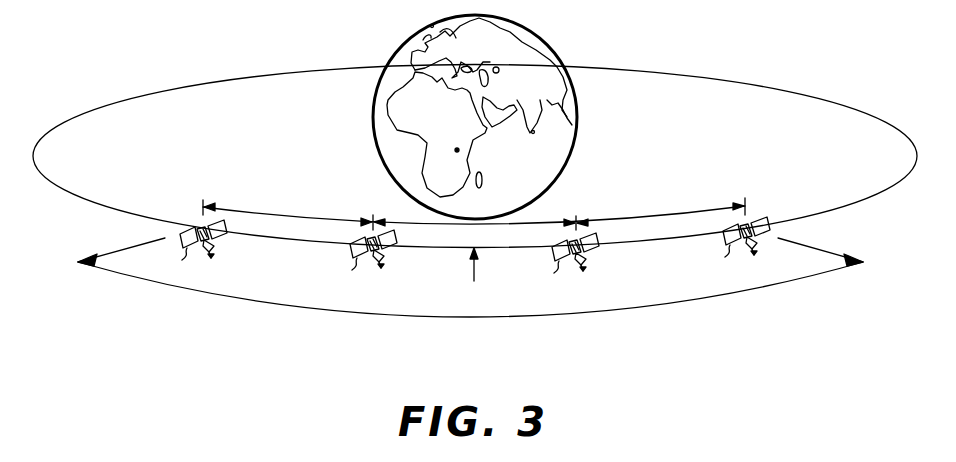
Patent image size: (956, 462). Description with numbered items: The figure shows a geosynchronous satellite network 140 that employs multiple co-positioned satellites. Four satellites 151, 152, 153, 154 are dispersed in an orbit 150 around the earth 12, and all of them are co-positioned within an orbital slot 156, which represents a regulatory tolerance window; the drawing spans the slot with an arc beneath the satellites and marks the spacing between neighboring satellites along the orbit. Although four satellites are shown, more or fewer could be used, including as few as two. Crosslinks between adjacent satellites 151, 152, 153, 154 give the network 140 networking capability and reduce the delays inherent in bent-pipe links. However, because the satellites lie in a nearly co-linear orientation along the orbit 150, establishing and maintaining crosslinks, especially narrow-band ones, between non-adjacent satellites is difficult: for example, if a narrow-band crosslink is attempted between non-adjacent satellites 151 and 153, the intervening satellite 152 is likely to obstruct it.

The earth 12 is at (376, 103).
The geosynchronous satellite network 140 is at (294, 401).
The orbit 150 is at (158, 92).
The satellite 151 is at (188, 251).
The satellite 152 is at (357, 264).
The satellite 153 is at (560, 265).
The satellite 154 is at (729, 248).
The orbital slot 156 is at (472, 318).